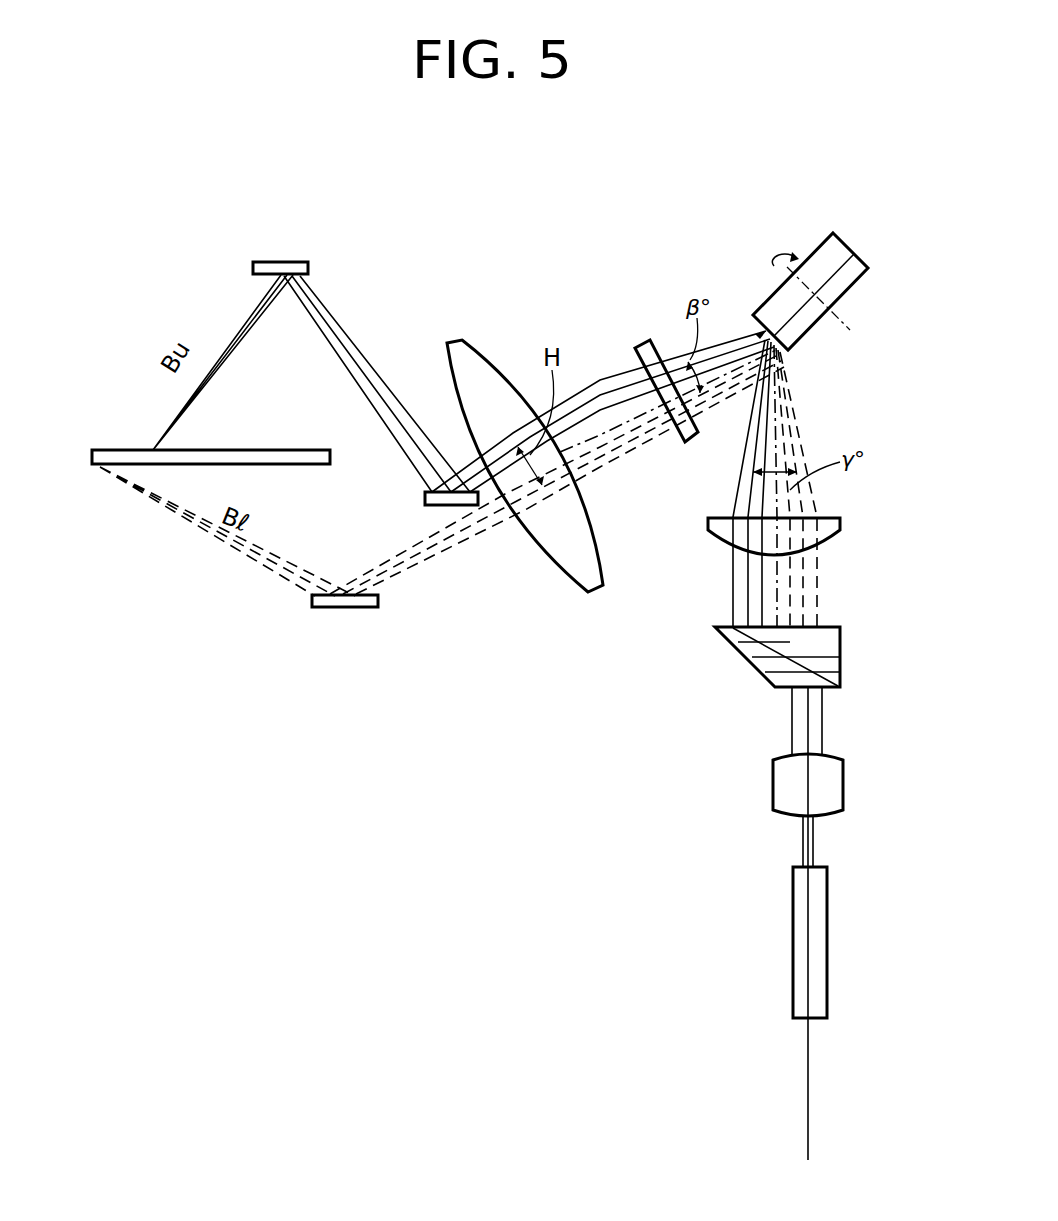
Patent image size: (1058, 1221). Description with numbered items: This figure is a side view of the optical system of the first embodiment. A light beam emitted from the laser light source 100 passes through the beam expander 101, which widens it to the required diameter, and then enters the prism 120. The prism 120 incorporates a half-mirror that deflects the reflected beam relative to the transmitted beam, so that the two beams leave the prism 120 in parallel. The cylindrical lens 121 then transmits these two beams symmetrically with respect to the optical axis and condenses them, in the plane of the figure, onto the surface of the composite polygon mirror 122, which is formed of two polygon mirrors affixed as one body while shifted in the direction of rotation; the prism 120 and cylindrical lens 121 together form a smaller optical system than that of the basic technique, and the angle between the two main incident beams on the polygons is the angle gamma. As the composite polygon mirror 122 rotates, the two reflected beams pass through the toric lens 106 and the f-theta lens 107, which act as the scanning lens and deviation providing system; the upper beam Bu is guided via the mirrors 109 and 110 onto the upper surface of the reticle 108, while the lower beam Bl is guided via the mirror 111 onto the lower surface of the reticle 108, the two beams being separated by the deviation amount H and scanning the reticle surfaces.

The laser light source 100 is at (797, 900).
The beam expander 101 is at (773, 790).
The toric lens 106 is at (642, 340).
The f-θ lens 107 is at (472, 362).
The reticle 108 is at (117, 450).
The mirror 109 is at (425, 495).
The mirror 110 is at (308, 268).
The mirror 111 is at (328, 607).
The prism 120 is at (752, 662).
The cylindrical lens 121 is at (712, 542).
The composite polygon mirror 122 is at (872, 258).